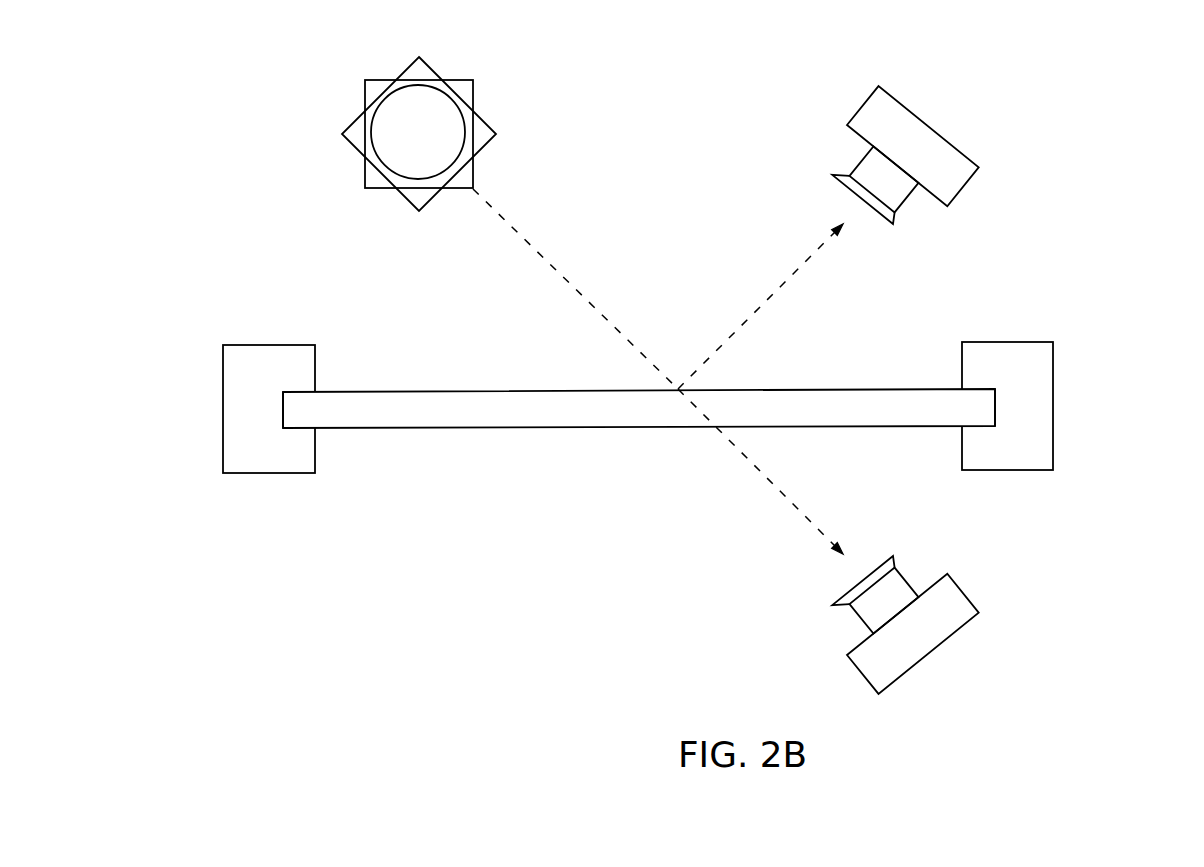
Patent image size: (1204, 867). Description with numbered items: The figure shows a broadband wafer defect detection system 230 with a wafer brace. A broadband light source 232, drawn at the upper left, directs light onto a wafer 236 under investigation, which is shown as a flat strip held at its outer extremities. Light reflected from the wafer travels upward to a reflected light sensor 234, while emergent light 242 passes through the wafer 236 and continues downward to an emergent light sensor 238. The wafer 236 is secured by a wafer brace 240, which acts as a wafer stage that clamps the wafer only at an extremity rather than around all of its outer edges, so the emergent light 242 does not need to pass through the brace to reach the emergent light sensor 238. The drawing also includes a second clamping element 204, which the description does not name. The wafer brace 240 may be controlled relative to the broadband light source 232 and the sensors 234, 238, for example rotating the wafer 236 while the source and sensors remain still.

The substrate holder 204 is at (1053, 405).
The broadband wafer defect detection system 230 is at (690, 106).
The broadband light source 232 is at (418, 88).
The reflected light sensor 234 is at (930, 123).
The wafer 236 is at (897, 388).
The emergent light sensor 238 is at (930, 653).
The wafer brace 240 is at (260, 473).
The emergent light 242 is at (757, 468).